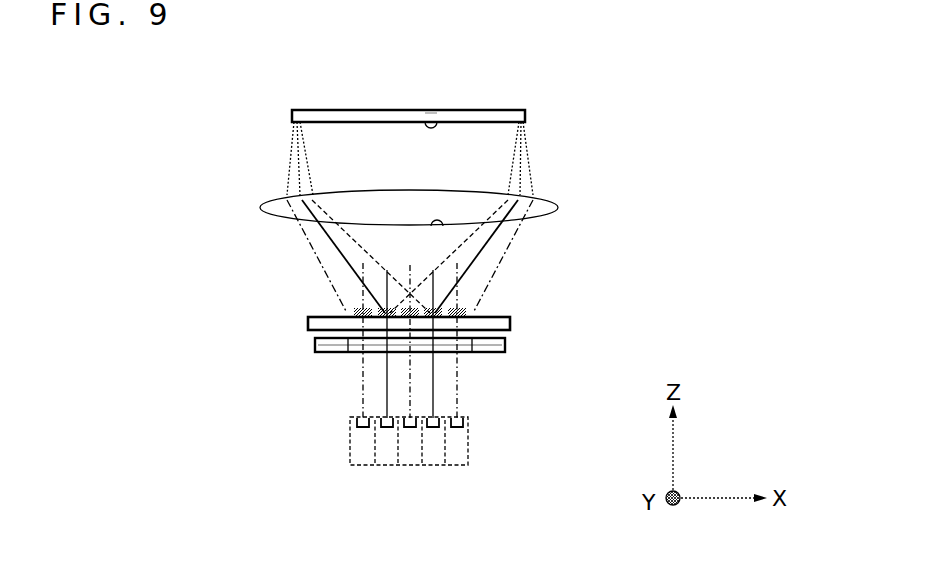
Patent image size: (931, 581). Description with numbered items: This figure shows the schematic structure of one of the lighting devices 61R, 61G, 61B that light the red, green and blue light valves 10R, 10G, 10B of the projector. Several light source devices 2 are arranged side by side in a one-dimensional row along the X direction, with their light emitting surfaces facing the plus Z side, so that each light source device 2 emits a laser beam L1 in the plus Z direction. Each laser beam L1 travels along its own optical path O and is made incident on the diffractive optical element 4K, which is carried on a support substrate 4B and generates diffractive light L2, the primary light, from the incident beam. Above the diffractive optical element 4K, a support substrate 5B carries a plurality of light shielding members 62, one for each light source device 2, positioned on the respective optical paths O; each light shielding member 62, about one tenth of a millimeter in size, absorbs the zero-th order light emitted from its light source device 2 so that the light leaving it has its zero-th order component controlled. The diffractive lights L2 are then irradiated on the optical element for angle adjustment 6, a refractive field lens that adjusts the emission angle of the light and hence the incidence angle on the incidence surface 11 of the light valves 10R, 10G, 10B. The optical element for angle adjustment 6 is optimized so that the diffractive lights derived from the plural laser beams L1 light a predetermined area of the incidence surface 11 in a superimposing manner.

The incidence surface 11 is at (434, 110).
The light valve 10R is at (506, 97).
The light valve 10G is at (506, 97).
The light valve 10B is at (526, 111).
The illumination device (red) 61R is at (535, 294).
The illumination device (green) 61G is at (535, 294).
The illumination device (blue) 61B is at (656, 161).
The optical element for angle adjustment 6 is at (547, 200).
The diffractive light L2 is at (312, 252).
The optical path O is at (299, 282).
The light shielding member 62 is at (340, 312).
The support substrate 5B is at (512, 321).
The support substrate 4B is at (506, 346).
The diffractive optical element 4K is at (463, 353).
The laser beam L1 is at (460, 393).
The light source device 2 is at (385, 466).